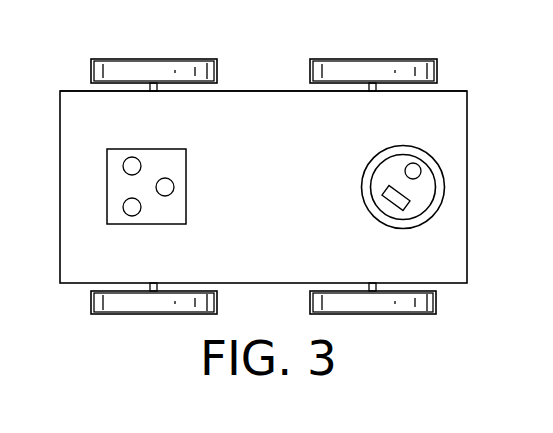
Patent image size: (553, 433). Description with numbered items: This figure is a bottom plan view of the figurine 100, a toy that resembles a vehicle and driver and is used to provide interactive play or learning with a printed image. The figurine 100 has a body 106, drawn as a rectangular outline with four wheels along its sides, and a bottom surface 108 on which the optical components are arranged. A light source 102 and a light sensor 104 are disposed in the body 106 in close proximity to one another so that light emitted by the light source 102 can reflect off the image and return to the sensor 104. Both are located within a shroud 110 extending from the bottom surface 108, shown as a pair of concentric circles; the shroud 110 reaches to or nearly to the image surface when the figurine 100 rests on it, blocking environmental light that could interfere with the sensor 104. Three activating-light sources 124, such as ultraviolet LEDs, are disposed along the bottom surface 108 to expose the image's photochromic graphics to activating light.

The figurine 100 is at (260, 91).
The light source 102 is at (419, 165).
The light sensor 104 is at (394, 201).
The body 106 is at (468, 108).
The bottom surface 108 is at (284, 251).
The shroud 110 is at (444, 188).
The activating-light sources 124 is at (131, 157).